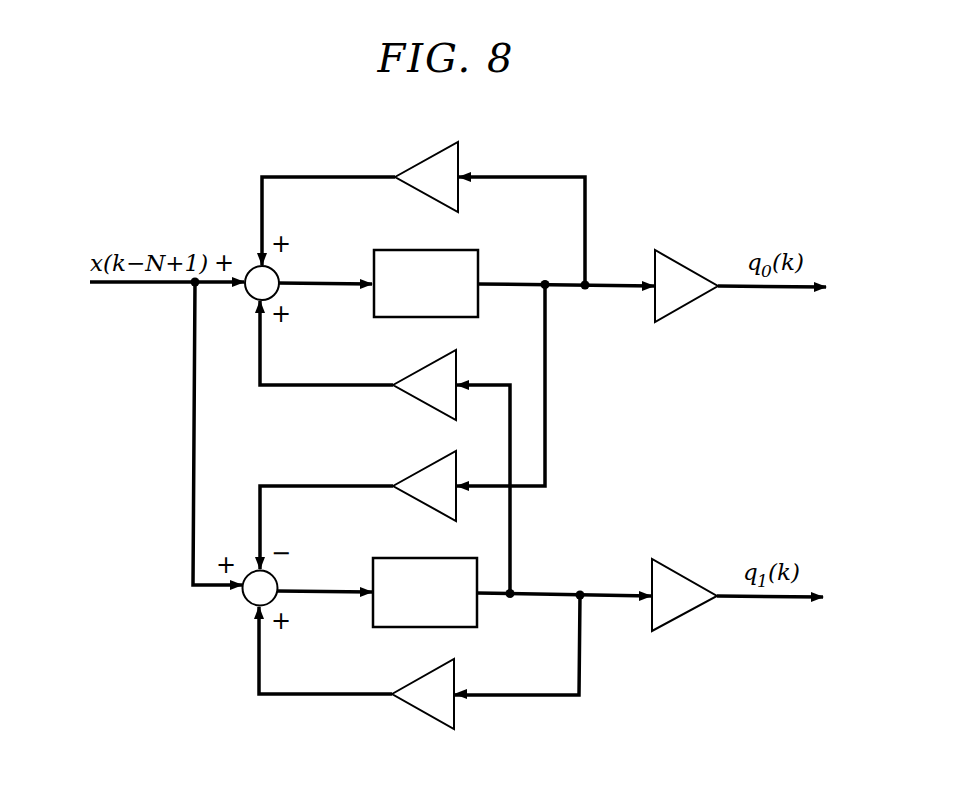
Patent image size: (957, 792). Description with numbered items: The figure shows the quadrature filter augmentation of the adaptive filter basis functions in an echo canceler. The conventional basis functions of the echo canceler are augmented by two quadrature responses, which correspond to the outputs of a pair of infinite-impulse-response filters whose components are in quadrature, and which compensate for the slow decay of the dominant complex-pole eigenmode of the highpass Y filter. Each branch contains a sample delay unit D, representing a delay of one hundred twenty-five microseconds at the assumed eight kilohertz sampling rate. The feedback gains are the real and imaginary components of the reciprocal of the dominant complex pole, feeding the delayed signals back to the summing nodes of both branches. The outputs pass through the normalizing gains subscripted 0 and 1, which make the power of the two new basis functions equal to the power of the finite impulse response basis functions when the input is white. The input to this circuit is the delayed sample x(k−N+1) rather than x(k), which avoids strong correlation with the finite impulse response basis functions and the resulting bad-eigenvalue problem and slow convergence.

The gain g0 multiplier 0 is at (686, 286).
The gain g1 multiplier 1 is at (684, 595).
The sample delay unit D is at (425, 438).